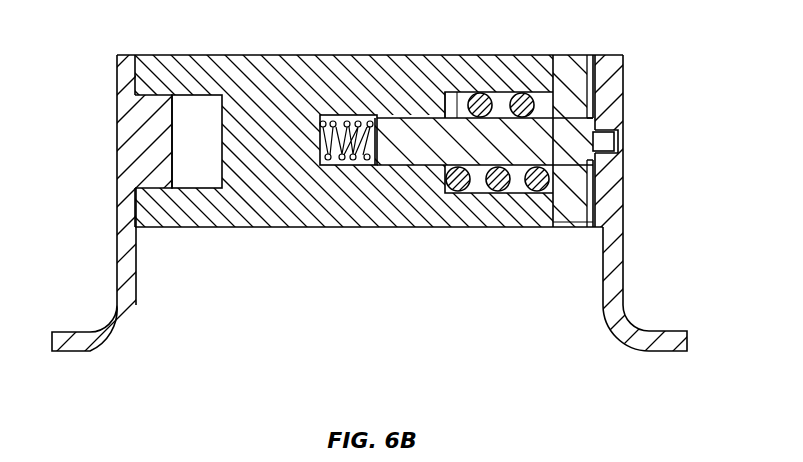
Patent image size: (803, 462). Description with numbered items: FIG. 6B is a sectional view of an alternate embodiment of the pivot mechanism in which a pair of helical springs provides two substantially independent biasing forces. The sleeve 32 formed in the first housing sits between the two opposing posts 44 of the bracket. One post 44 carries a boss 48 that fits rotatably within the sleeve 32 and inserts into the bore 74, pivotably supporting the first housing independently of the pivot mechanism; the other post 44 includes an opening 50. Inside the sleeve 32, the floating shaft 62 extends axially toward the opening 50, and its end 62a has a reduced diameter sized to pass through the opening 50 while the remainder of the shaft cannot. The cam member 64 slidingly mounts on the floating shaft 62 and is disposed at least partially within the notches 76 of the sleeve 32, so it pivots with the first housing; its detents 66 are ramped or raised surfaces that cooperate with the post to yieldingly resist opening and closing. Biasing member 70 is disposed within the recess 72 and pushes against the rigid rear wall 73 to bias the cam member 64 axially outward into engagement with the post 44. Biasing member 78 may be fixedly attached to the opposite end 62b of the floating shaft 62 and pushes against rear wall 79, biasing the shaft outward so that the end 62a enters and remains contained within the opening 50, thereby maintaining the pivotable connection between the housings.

The sleeve 32 is at (185, 55).
The post 44 is at (125, 212).
The boss 48 is at (158, 125).
The bore 74 is at (192, 127).
The end of floating shaft 62b is at (362, 118).
The rear wall 79 is at (327, 163).
The biasing member 78 is at (355, 163).
The floating shaft 62 is at (432, 140).
The rear wall 73 is at (449, 97).
The recess 72 is at (462, 100).
The biasing member 70 is at (480, 100).
The cam member 64 is at (565, 73).
The detent 66 is at (588, 208).
The notch 76 is at (563, 227).
The opening 50 is at (622, 143).
The end of floating shaft 62a is at (622, 128).